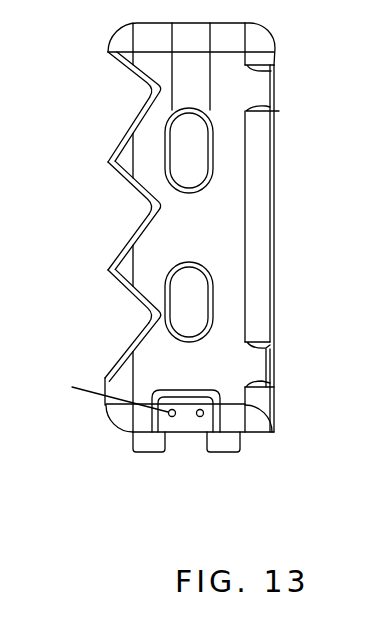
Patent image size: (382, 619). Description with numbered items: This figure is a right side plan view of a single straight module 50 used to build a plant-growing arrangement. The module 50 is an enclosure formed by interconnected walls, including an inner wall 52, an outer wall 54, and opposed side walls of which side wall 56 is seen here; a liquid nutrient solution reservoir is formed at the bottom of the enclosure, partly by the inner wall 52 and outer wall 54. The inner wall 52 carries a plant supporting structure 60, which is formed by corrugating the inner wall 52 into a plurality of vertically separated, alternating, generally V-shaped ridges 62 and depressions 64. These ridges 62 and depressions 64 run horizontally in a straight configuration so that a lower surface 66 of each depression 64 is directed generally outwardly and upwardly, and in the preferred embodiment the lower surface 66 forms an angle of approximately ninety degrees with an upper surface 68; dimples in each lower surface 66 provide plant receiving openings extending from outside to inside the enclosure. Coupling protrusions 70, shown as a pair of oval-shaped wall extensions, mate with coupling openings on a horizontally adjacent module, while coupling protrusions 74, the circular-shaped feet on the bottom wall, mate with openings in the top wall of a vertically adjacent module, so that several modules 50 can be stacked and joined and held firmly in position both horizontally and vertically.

The straight module 50 is at (163, 537).
The inner wall 52 is at (112, 66).
The outer wall 54 is at (276, 100).
The side wall 56 is at (155, 358).
The plant supporting structure 60 is at (122, 176).
The ridge 62 is at (108, 270).
The depression 64 is at (130, 212).
The lower surface 66 is at (128, 243).
The upper surface 68 is at (119, 93).
The coupling protrusions 70 is at (192, 283).
The coupling protrusions 74 is at (140, 442).